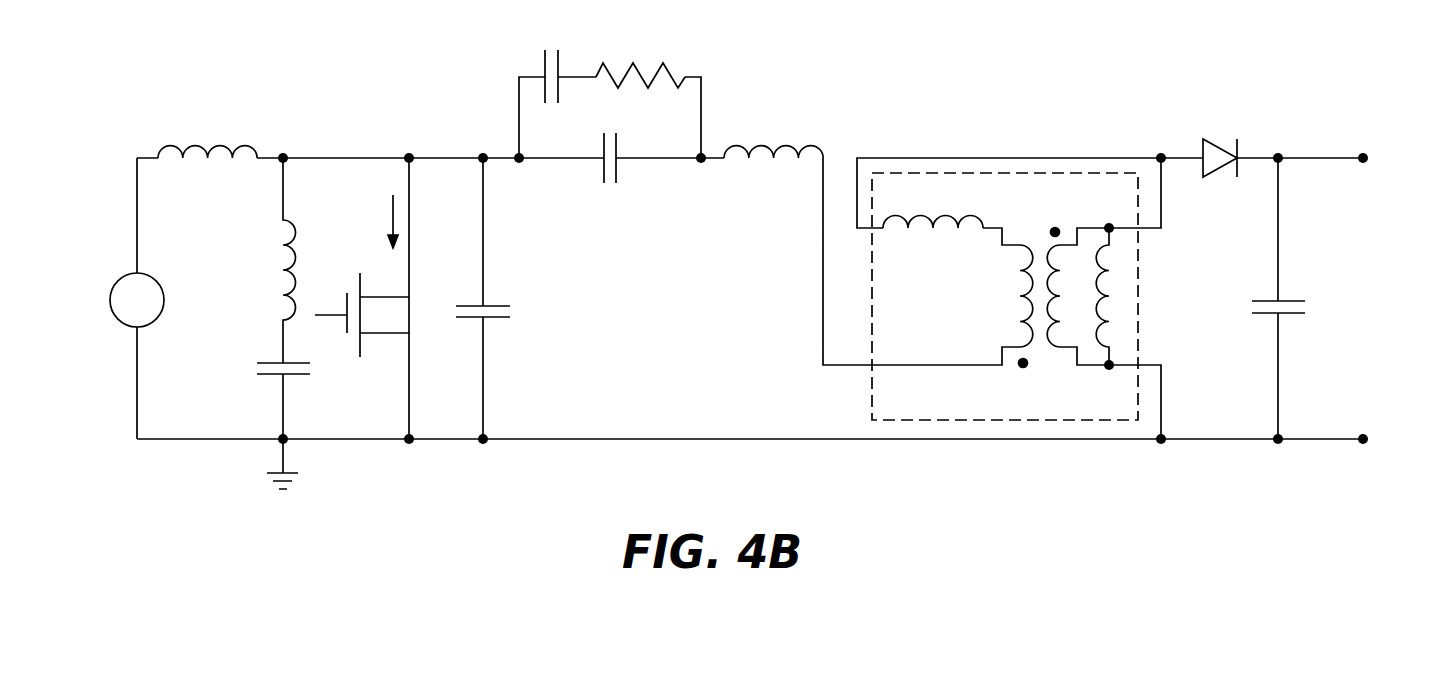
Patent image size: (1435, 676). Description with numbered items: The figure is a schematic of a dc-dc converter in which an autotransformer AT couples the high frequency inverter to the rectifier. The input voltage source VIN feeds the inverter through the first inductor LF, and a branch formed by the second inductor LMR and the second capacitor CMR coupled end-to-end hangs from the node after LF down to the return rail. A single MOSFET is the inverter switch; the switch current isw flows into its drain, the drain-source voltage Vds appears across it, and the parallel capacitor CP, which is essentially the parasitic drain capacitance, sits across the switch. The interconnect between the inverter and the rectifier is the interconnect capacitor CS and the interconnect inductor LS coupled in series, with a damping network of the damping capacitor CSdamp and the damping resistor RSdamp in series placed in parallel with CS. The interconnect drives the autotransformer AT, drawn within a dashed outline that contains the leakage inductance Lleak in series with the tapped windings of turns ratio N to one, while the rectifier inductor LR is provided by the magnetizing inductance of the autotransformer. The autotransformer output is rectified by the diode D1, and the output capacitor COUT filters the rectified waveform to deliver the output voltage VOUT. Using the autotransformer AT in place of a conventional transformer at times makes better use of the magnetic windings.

The first inductor LF is at (207, 136).
The second inductor LMR is at (264, 260).
The second capacitor CMR is at (257, 395).
The input voltage source VIN is at (114, 301).
The switch current isw is at (375, 221).
The drain-source voltage Vds is at (427, 318).
The parallel capacitor CP is at (502, 321).
The damping capacitor CSdamp is at (551, 60).
The damping resistor RSdamp is at (644, 52).
The interconnect capacitor CS is at (610, 143).
The interconnect inductor LS is at (773, 135).
The autotransformer AT is at (1004, 173).
The leakage inductance Lleak is at (933, 208).
The rectifier inductor LR is at (1088, 296).
The diode D1 is at (1220, 144).
The output capacitor COUT is at (1261, 324).
The output voltage VOUT is at (1368, 304).